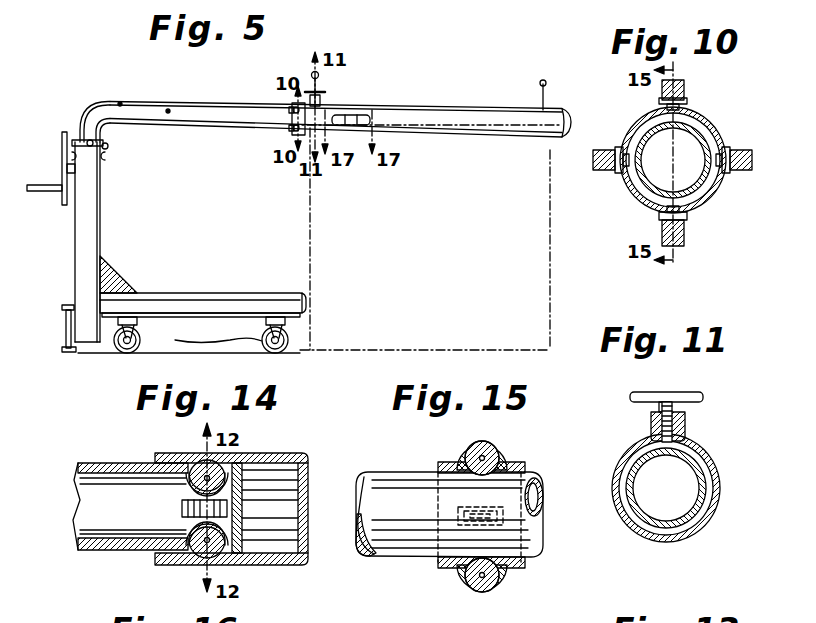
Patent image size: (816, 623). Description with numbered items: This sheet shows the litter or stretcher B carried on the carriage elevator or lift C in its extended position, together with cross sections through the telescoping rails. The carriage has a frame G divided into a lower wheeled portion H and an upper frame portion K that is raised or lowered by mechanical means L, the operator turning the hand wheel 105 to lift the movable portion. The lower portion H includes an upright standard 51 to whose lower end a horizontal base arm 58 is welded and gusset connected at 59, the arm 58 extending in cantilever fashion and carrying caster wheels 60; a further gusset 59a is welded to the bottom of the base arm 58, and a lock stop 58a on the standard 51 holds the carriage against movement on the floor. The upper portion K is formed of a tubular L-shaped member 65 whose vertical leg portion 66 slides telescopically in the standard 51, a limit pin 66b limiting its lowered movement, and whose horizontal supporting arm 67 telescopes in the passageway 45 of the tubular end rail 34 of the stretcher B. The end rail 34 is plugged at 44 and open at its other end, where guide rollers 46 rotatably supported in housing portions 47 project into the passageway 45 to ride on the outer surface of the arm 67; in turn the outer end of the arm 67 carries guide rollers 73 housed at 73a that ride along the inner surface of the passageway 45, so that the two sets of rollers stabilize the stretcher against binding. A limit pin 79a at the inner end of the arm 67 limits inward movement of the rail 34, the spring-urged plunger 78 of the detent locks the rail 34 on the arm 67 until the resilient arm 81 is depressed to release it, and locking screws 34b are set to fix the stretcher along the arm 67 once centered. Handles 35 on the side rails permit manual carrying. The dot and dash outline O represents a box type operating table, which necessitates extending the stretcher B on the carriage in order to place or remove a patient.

In FIG. 5, the end rail 34 is at (470, 133).
In FIG. 10, the end rail 34 is at (718, 191).
In FIG. 11, the end rail 34 is at (720, 487).
In FIG. 14, the end rail 34 is at (252, 566).
In FIG. 15, the end rail 34 is at (520, 462).
In FIG. 5, the horizontal supporting arm 67 is at (207, 114).
In FIG. 10, the horizontal supporting arm 67 is at (640, 180).
In FIG. 11, the horizontal supporting arm 67 is at (695, 464).
In FIG. 14, the horizontal supporting arm 67 is at (118, 542).
In FIG. 15, the horizontal supporting arm 67 is at (532, 527).
In FIG. 5, the plug 44 is at (572, 122).
In FIG. 10, the plug 44 is at (632, 160).
In FIG. 14, the plug 44 is at (304, 488).
In FIG. 14, the passageway 45 is at (275, 470).
In FIG. 15, the passageway 45 is at (518, 481).
In FIG. 10, the guide roller 46 is at (686, 90).
In FIG. 15, the guide roller 46 is at (492, 447).
In FIG. 5, the housing portion 47 is at (291, 130).
In FIG. 10, the housing portion 47 is at (686, 240).
In FIG. 15, the housing portion 47 is at (456, 453).
In FIG. 14, the guide roller 73 is at (230, 467).
In FIG. 14, the roller housing 73a is at (182, 528).
In FIG. 5, the locking screw 34b is at (322, 88).
In FIG. 11, the locking screw 34b is at (690, 402).
In FIG. 5, the resilient arm 81 is at (336, 117).
In FIG. 5, the handle 35 is at (540, 93).
In FIG. 5, the standard 51 is at (97, 222).
In FIG. 5, the base arm 58 is at (245, 302).
In FIG. 5, the lock stop 58a is at (65, 330).
In FIG. 5, the gusset 59 is at (118, 275).
In FIG. 5, the gusset 59a is at (108, 336).
In FIG. 5, the caster wheel 60 is at (141, 340).
In FIG. 5, the L-shaped member 65 is at (129, 126).
In FIG. 5, the vertical leg portion 66 is at (106, 148).
In FIG. 5, the limit pin 66b is at (88, 140).
In FIG. 5, the plunger 78 is at (168, 111).
In FIG. 5, the limit pin 79a is at (120, 104).
In FIG. 5, the hand wheel 105 is at (60, 146).
In FIG. 5, the upper frame portion K is at (178, 108).
In FIG. 5, the litter or stretcher B is at (408, 110).
In FIG. 5, the carriage elevator or lift C is at (92, 107).
In FIG. 5, the lower wheeled portion H is at (195, 300).
In FIG. 5, the mechanical means L is at (60, 198).
In FIG. 5, the frame G is at (73, 297).
In FIG. 5, the operating table O is at (552, 270).